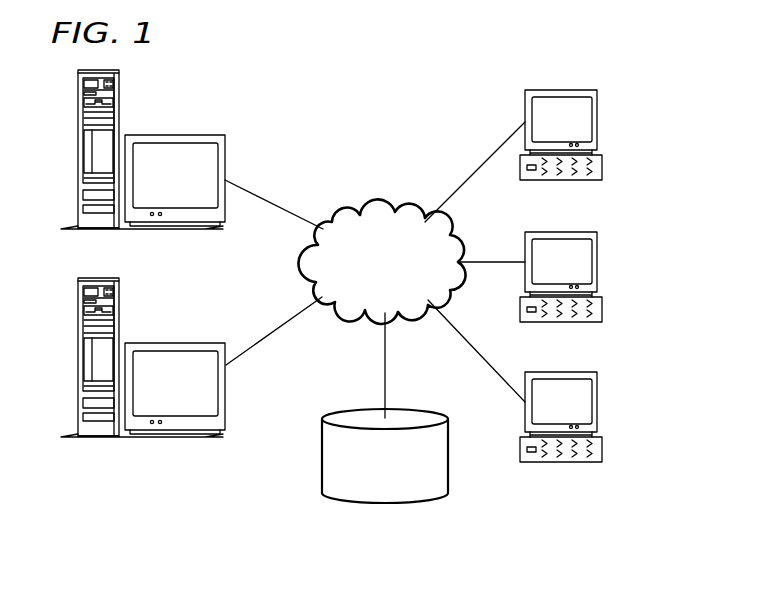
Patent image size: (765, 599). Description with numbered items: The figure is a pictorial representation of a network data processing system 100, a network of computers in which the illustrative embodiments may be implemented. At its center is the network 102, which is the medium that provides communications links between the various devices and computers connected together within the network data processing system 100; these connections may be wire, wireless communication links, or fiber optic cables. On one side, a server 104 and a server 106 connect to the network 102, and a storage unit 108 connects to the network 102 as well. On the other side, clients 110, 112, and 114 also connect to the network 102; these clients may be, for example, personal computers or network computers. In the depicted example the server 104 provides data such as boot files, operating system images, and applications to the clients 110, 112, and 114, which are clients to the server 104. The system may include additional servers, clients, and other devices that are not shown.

The network data processing system 100 is at (432, 103).
The network 102 is at (357, 213).
The server 104 is at (78, 148).
The server 106 is at (78, 362).
The storage unit 108 is at (368, 503).
The client 110 is at (597, 119).
The client 112 is at (597, 262).
The client 114 is at (597, 400).